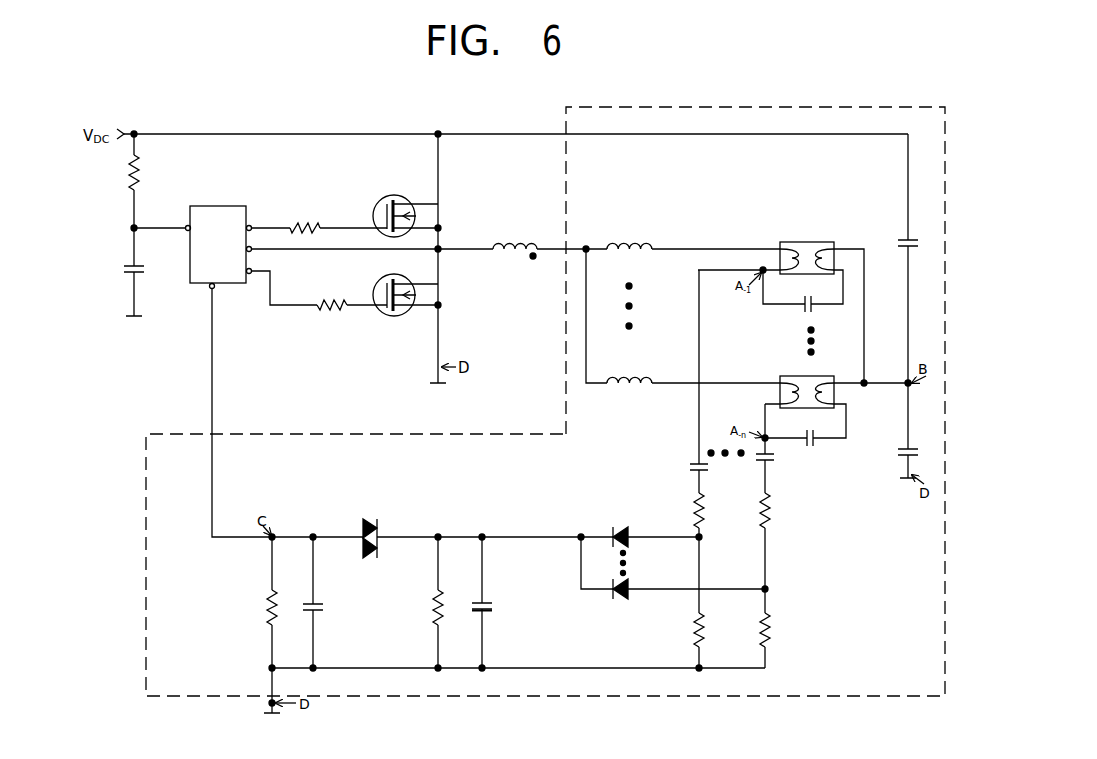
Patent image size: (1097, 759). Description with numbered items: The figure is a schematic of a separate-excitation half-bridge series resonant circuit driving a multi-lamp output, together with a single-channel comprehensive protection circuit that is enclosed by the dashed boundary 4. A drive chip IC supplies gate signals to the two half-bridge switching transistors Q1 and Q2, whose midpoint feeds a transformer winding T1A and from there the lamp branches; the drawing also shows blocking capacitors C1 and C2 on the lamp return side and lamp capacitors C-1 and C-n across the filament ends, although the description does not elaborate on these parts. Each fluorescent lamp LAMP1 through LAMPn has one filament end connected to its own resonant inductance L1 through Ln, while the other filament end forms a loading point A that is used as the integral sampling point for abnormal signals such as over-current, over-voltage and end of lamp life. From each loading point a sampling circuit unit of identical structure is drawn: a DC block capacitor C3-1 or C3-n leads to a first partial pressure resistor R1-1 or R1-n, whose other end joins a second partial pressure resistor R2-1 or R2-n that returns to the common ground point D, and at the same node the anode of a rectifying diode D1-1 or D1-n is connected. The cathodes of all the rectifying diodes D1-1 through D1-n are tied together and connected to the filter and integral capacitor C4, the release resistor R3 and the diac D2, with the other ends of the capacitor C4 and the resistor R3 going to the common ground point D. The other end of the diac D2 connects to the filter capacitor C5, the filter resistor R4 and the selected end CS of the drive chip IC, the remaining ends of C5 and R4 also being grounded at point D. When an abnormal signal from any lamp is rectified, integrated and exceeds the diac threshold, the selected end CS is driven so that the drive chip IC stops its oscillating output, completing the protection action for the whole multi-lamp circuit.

The lamp ballast circuit 4 is at (140, 575).
The drive chip IC is at (219, 239).
The high-side switching transistor Q1 is at (404, 210).
The low-side switching transistor Q2 is at (404, 290).
The transformer primary winding T1A is at (515, 241).
The resonant inductance L1 is at (629, 236).
The resonant inductance Ln is at (629, 371).
The fluorescent lamp LAMP1 is at (807, 249).
The fluorescent lamp LAMPn is at (807, 383).
The first lamp resonant capacitor C-1 is at (800, 314).
The n-th lamp resonant capacitor C-n is at (811, 449).
The DC block capacitor C3-1 is at (711, 473).
The DC block capacitor C3-n is at (777, 468).
The first partial pressure resistor R1-1 is at (713, 510).
The first partial pressure resistor R1-n is at (779, 510).
The second partial pressure resistor R2-1 is at (710, 630).
The second partial pressure resistor R2-n is at (780, 630).
The DC blocking capacitor C1 is at (916, 244).
The DC blocking capacitor C2 is at (916, 455).
The filter resistor R4 is at (262, 607).
The filter capacitor C5 is at (321, 604).
The diac D2 is at (381, 538).
The release resistor R3 is at (428, 607).
The filter and integral capacitor C4 is at (488, 595).
The rectifying diode D1-1 is at (615, 527).
The rectifying diode D1-n is at (617, 600).